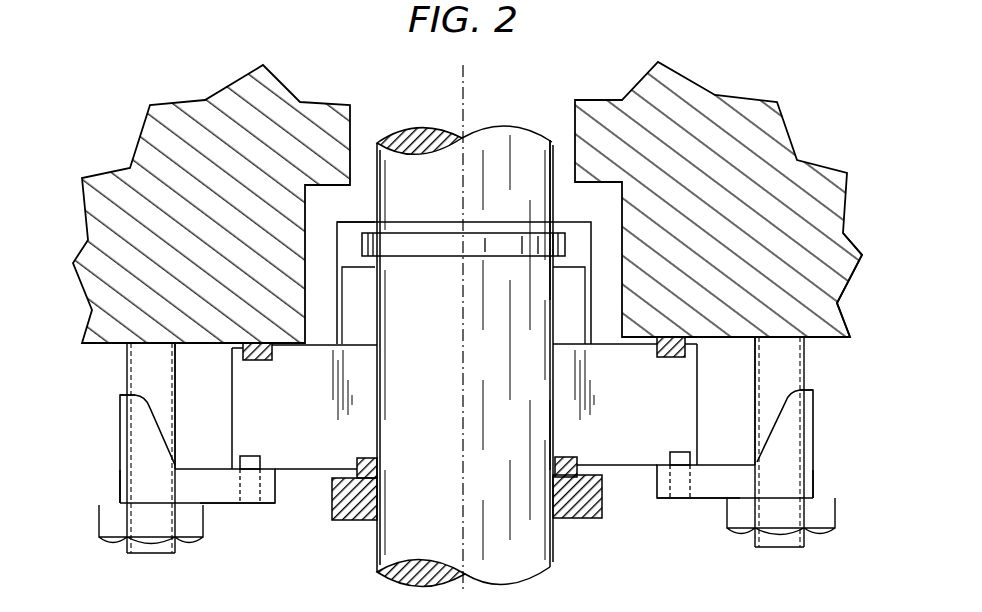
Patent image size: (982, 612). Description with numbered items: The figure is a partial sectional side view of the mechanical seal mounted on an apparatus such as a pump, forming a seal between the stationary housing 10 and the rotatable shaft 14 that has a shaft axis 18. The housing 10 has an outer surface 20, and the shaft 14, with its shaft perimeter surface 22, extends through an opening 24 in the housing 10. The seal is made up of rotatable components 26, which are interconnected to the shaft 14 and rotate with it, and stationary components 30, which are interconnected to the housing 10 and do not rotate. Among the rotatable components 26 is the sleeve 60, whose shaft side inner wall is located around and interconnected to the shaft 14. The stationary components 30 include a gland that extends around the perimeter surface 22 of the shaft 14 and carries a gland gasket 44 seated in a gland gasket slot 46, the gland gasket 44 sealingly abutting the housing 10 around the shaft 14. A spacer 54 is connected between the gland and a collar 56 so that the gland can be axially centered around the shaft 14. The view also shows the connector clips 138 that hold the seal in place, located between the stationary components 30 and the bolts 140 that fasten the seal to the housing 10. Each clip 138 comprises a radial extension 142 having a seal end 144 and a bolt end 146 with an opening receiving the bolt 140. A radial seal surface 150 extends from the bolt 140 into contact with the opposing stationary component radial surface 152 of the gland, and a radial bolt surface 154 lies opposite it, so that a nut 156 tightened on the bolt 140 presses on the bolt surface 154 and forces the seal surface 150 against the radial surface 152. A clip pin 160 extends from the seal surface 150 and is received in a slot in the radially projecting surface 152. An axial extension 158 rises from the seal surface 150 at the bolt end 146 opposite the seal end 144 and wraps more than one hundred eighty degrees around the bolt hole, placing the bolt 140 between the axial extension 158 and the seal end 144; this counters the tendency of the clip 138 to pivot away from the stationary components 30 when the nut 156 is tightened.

The stationary housing 10 is at (853, 253).
The rotatable shaft 14 is at (408, 398).
The shaft axis 18 is at (459, 91).
The outer surface 20 is at (848, 349).
The shaft perimeter surface 22 is at (553, 163).
The opening 24 is at (620, 217).
The rotatable components 26 is at (377, 223).
The stationary components 30 is at (306, 466).
The gland gasket 44 is at (655, 350).
The gland gasket slot 46 is at (667, 360).
The spacer 54 is at (553, 465).
The collar 56 is at (576, 520).
The sleeve 60 is at (520, 222).
The connector clip 138 is at (120, 444).
The bolt 140 is at (177, 350).
The radial extension 142 is at (220, 505).
The seal end 144 is at (286, 469).
The bolt end 146 is at (120, 479).
The radial seal surface 150 is at (185, 468).
The stationary component radial surface 152 is at (233, 455).
The radial bolt surface 154 is at (222, 500).
The nut 156 is at (97, 527).
The axial extension 158 is at (120, 420).
The clip pin 160 is at (262, 456).